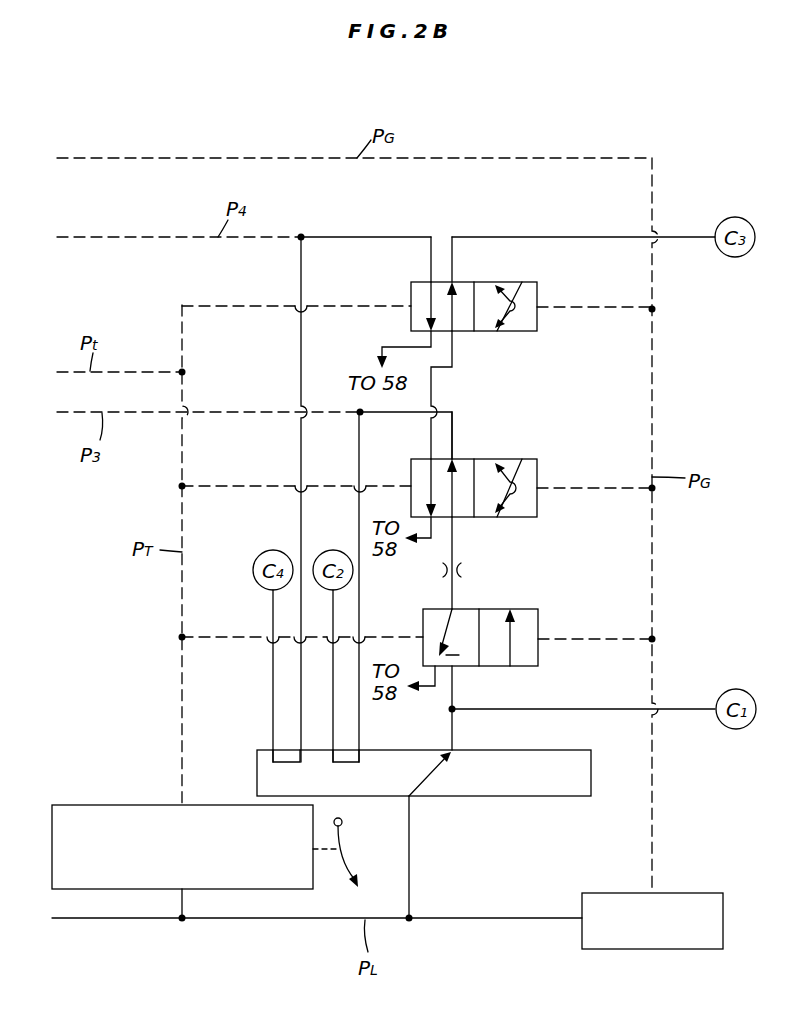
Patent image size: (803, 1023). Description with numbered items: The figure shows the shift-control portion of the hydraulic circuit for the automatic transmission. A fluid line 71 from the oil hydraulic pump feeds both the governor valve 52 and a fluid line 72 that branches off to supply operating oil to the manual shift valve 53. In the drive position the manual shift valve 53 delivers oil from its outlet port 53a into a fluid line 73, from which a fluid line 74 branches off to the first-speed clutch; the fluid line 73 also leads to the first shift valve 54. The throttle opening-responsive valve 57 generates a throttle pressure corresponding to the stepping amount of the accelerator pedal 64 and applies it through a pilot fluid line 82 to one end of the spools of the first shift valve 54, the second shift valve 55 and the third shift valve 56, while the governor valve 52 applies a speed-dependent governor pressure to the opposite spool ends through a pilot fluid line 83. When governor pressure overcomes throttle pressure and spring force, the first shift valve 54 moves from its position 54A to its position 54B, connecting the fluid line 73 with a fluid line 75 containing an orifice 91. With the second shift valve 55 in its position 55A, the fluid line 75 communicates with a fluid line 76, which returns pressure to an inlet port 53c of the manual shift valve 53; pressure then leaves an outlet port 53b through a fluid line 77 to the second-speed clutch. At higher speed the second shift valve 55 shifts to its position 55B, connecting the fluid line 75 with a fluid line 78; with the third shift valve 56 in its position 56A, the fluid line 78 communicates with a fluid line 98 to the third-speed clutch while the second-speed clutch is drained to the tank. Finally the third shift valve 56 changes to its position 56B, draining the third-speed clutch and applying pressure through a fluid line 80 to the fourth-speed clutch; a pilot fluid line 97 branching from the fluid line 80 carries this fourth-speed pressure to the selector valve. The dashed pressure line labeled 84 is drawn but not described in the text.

The pilot fluid line 97 is at (128, 236).
The fluid line 98 is at (575, 237).
The fluid line 80 is at (350, 238).
The pilot fluid line 82 is at (182, 606).
The pilot fluid line 83 is at (652, 588).
The P3 pressure passage 84 is at (152, 413).
The third shift valve 56 is at (493, 316).
The position of third shift valve 56A is at (431, 283).
The position of third shift valve 56B is at (525, 285).
The fluid line 78 is at (454, 368).
The fluid line 76 is at (455, 420).
The second shift valve 55 is at (493, 455).
The position of second shift valve 55A is at (431, 459).
The position of second shift valve 55B is at (513, 462).
The orifice 91 is at (460, 565).
The fluid line 75 is at (455, 600).
The first shift valve 54 is at (493, 601).
The position of first shift valve 54A is at (430, 609).
The position of first shift valve 54B is at (521, 604).
The fluid line 74 is at (530, 709).
The fluid line 73 is at (452, 726).
The fluid line 77 is at (333, 670).
The manual shift valve 53 is at (437, 757).
The outlet port 53a is at (452, 752).
The outlet port 53b is at (327, 742).
The inlet port 53c is at (372, 742).
The throttle opening-responsive valve 57 is at (145, 805).
The accelerator pedal 64 is at (342, 835).
The fluid line 72 is at (410, 833).
The fluid line 71 is at (483, 920).
The governor valve 52 is at (675, 893).